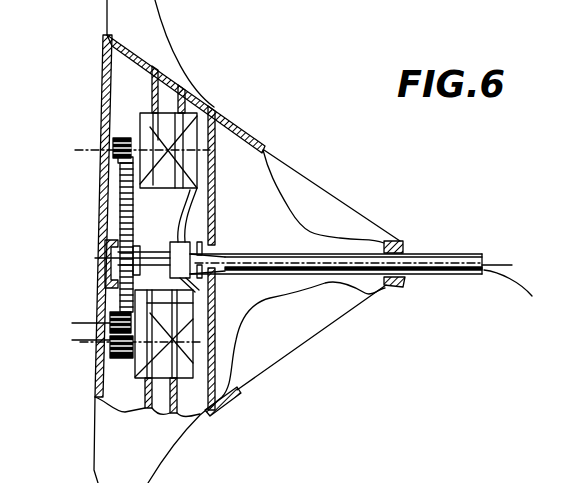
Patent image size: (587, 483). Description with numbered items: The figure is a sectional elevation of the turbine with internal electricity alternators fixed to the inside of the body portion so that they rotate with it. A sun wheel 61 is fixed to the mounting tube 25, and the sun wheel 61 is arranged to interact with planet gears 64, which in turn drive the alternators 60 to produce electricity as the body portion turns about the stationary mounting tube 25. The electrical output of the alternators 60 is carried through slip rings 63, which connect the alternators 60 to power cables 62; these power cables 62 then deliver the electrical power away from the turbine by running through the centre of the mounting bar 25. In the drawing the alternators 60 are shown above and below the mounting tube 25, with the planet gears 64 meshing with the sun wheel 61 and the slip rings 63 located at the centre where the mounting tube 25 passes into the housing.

The mounting tube 25 is at (228, 254).
The alternators 60 is at (193, 128).
The sun wheel 61 is at (123, 181).
The power cables 62 is at (508, 279).
The slip rings 63 is at (170, 242).
The planet gears 64 is at (118, 143).